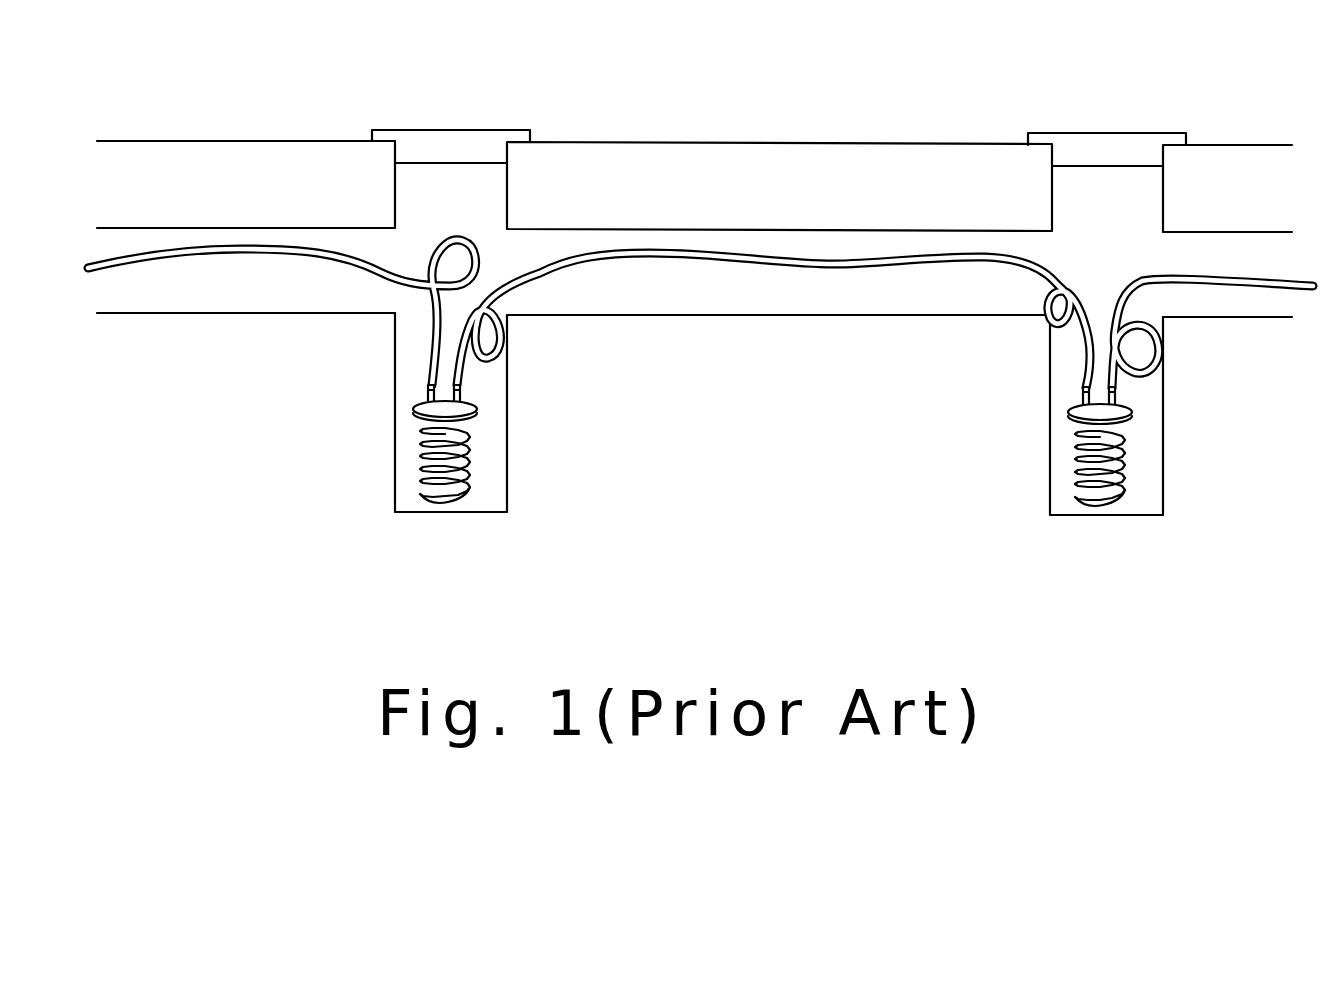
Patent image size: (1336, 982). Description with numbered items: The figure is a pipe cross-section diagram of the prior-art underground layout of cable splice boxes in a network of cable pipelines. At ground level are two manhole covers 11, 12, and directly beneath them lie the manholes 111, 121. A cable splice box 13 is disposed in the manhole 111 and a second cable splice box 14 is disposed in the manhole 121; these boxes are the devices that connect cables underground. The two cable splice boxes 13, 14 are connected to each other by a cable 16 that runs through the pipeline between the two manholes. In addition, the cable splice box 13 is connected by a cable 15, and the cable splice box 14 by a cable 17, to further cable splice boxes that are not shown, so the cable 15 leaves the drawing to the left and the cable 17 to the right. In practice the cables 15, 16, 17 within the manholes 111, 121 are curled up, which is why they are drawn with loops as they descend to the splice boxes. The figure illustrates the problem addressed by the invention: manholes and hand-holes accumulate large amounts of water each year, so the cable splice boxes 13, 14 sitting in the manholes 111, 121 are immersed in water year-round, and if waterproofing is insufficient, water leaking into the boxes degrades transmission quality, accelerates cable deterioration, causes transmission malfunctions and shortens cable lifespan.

The manhole cover 11 is at (450, 130).
The manhole cover 12 is at (1112, 133).
The manhole 111 is at (490, 457).
The manhole 121 is at (1142, 497).
The cable splice box 13 is at (428, 450).
The cable splice box 14 is at (1083, 452).
The cable 15 is at (223, 258).
The cable 16 is at (814, 268).
The cable 17 is at (1228, 291).